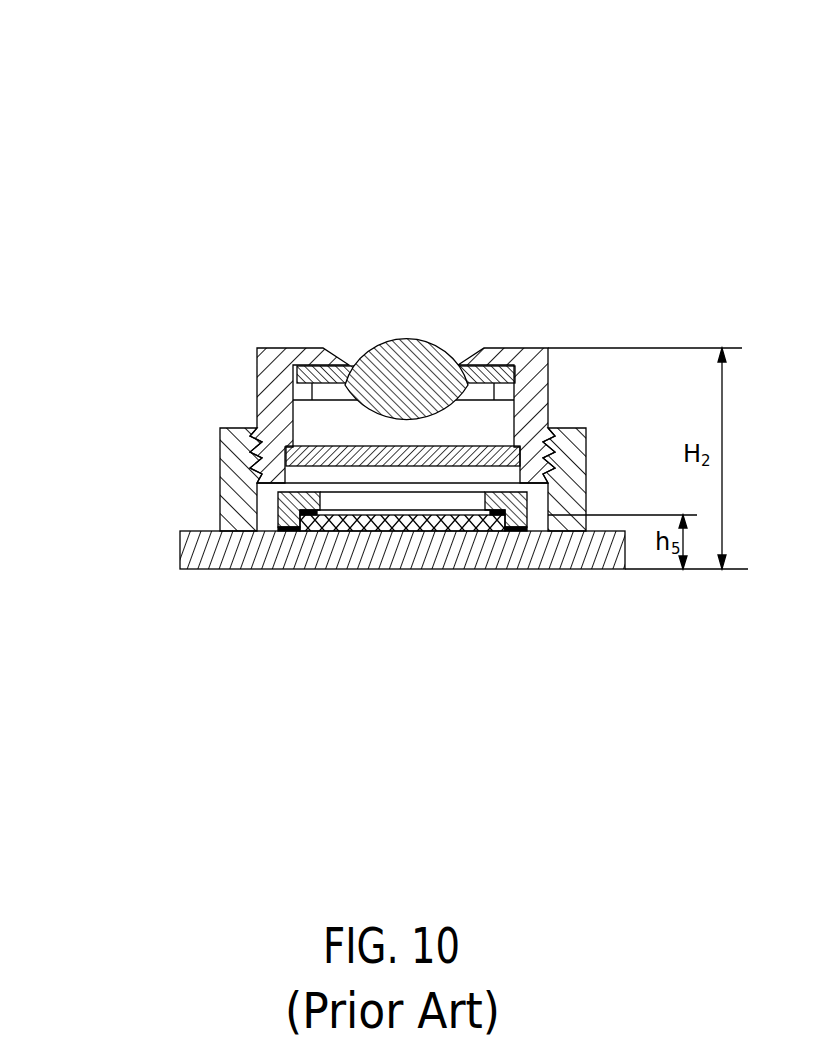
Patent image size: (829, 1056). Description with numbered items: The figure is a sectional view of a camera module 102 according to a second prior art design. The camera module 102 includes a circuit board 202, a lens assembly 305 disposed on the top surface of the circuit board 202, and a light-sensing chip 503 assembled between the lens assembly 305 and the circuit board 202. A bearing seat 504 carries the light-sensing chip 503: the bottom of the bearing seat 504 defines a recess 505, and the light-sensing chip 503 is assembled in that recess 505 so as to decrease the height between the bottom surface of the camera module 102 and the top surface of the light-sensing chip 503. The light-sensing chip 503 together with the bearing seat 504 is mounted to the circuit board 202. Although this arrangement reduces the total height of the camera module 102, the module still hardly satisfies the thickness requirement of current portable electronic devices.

The camera module 102 is at (80, 44).
The lens assembly 305 is at (383, 300).
The circuit board 202 is at (537, 548).
The light-sensing chip 503 is at (388, 531).
The bearing seat 504 is at (280, 497).
The recess 505 is at (502, 531).